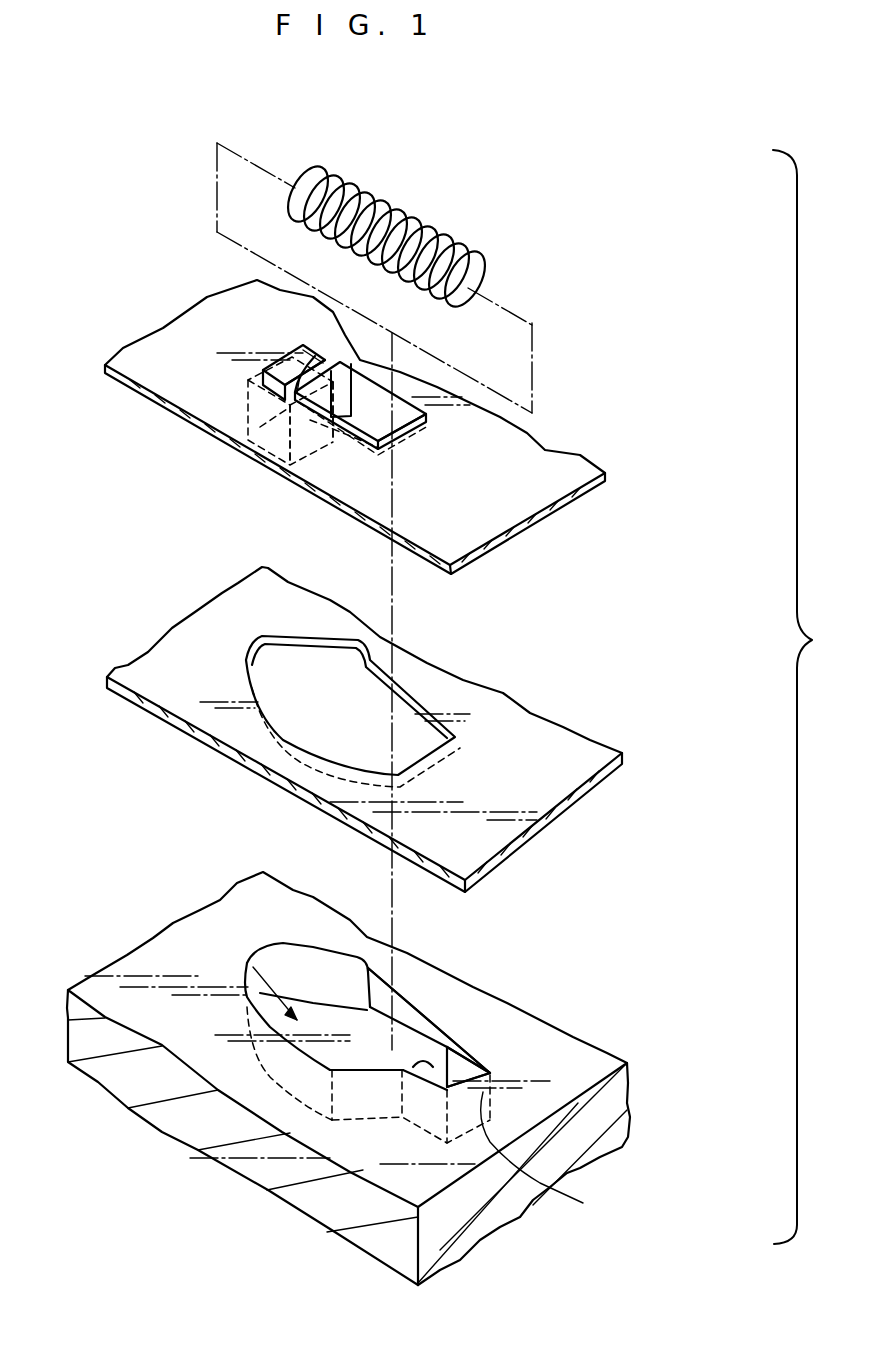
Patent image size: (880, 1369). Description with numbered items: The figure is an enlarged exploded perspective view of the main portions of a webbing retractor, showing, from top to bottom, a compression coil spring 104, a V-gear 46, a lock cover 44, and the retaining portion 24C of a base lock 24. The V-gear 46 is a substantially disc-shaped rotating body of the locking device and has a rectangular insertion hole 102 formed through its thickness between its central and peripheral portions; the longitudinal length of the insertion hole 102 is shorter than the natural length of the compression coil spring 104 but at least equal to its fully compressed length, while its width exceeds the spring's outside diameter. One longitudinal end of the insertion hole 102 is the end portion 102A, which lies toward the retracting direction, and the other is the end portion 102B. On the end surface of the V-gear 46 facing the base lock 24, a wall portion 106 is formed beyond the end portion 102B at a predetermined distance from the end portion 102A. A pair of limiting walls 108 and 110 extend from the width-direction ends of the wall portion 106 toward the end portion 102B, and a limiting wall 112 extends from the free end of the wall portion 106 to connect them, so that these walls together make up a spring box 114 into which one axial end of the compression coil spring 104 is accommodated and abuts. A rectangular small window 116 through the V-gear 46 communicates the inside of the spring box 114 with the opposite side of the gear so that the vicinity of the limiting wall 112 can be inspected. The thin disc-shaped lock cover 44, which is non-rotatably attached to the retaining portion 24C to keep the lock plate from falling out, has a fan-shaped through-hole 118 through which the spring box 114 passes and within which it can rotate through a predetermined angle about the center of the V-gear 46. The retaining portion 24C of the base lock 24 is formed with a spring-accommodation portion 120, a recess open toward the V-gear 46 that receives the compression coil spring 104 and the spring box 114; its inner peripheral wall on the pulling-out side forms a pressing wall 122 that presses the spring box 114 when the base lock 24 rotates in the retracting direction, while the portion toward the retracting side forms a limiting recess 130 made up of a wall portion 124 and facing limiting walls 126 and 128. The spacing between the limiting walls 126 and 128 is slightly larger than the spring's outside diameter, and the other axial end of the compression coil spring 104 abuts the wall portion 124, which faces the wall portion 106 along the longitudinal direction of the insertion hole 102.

The compression coil spring 104 is at (427, 234).
The insertion hole 102 is at (403, 381).
The end portion 102A is at (410, 421).
The end portion 102B is at (351, 345).
The limiting wall 108 is at (308, 352).
The wall portion 106 is at (323, 363).
The small window 116 is at (297, 393).
The limiting wall 110 is at (248, 472).
The limiting wall 112 is at (322, 420).
The spring box 114 is at (290, 478).
The V-gear 46 is at (553, 477).
The lock cover 44 is at (173, 640).
The through-hole 118 is at (420, 707).
The retaining portion 24C is at (590, 1060).
The base lock 24 is at (409, 1064).
The spring-accommodation portion 120 is at (250, 963).
The pressing wall 122 is at (293, 957).
The wall portion 124 is at (555, 1155).
The limiting wall 126 is at (403, 1072).
The limiting wall 128 is at (493, 1087).
The limiting recess 130 is at (458, 1075).